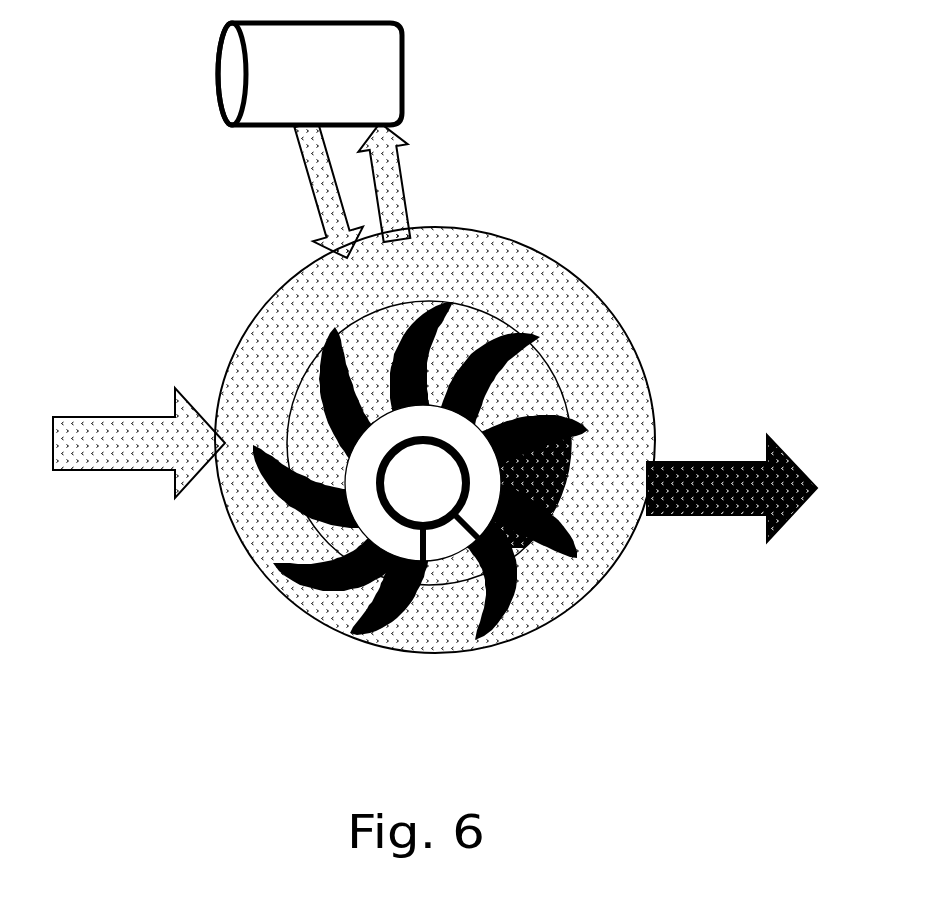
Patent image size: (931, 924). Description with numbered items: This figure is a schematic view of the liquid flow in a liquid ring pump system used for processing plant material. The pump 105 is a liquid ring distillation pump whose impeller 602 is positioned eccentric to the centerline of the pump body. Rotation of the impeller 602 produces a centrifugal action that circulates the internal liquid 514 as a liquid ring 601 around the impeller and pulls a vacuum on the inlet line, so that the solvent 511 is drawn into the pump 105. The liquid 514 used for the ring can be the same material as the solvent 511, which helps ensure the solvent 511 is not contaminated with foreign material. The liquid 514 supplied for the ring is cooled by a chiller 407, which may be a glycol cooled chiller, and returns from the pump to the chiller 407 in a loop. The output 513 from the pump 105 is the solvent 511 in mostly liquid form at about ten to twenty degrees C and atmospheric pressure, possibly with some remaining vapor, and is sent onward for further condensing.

The pump 105 is at (474, 378).
The chiller 407 is at (409, 54).
The solvent 511 is at (154, 398).
The output 513 is at (698, 458).
The liquid 514 is at (306, 200).
The liquid ring 601 is at (511, 226).
The impeller 602 is at (586, 532).